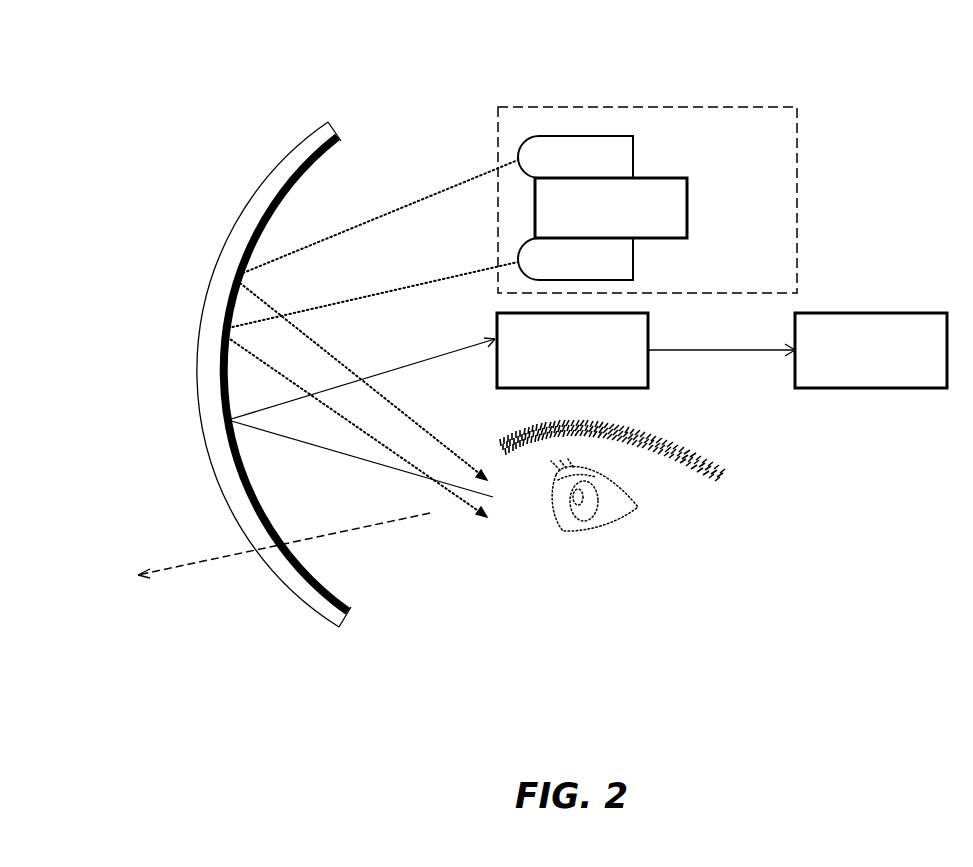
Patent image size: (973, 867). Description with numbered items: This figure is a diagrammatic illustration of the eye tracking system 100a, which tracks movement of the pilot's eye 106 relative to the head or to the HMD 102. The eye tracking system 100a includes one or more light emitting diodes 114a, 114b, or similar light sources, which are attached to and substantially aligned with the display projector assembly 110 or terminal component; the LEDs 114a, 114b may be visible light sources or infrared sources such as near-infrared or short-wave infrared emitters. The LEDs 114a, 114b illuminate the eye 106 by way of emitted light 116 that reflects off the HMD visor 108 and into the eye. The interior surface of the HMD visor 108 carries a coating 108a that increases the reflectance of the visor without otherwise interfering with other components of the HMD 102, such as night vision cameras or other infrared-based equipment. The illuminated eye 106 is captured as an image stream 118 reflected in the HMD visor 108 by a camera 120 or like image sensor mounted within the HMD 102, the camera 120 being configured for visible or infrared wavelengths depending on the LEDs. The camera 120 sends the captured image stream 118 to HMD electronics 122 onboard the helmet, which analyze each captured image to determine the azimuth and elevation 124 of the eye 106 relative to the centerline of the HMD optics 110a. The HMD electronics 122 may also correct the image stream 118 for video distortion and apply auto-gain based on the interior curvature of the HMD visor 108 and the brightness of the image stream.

The eye tracking system 100a is at (113, 108).
The HMD 102 is at (870, 167).
The eye 106 is at (615, 508).
The HMD visor 108 is at (237, 218).
The coating 108a is at (330, 588).
The display projector assembly 110 is at (628, 218).
The HMD optics 110a is at (782, 273).
The light emitting diode 114a is at (607, 170).
The light emitting diode 114b is at (607, 270).
The emitted light 116 is at (418, 282).
The image stream 118 is at (687, 352).
The camera 120 is at (592, 363).
The HMD electronics 122 is at (890, 363).
The azimuth and elevation 124 is at (202, 558).